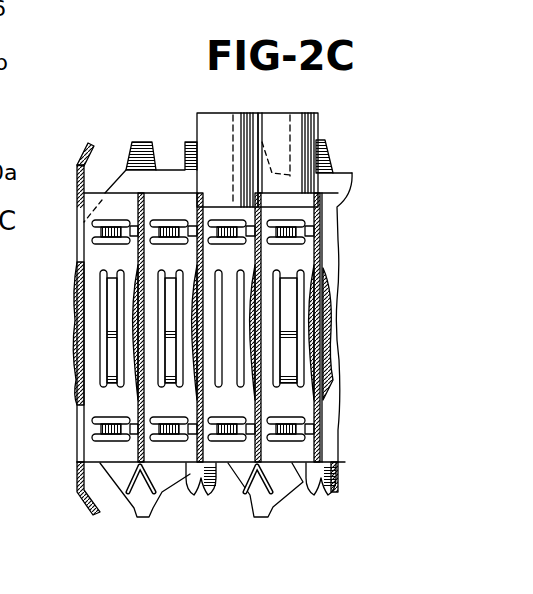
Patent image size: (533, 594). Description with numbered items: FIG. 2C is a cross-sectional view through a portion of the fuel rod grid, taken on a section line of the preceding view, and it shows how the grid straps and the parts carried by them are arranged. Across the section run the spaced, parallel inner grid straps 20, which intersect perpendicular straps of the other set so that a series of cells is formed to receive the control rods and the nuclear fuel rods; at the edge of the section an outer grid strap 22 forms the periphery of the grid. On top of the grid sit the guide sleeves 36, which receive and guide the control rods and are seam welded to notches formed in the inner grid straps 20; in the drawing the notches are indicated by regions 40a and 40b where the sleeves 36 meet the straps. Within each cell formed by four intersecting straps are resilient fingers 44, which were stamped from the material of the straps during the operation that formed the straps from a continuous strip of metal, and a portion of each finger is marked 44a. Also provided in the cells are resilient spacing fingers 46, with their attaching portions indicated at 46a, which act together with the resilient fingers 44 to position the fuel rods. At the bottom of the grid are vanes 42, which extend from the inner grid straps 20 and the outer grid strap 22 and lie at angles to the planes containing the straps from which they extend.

The inner grid strap 20 is at (318, 200).
The outer grid strap 22 is at (75, 180).
The guide sleeve 36 is at (231, 113).
The cam lobe 40a is at (140, 182).
The cam lobe 40b is at (198, 202).
The vane 42 is at (252, 489).
The resilient finger 44 is at (112, 368).
The slot insert 44a is at (262, 386).
The resilient spacing finger 46 is at (108, 432).
The spool pin 46a is at (315, 231).